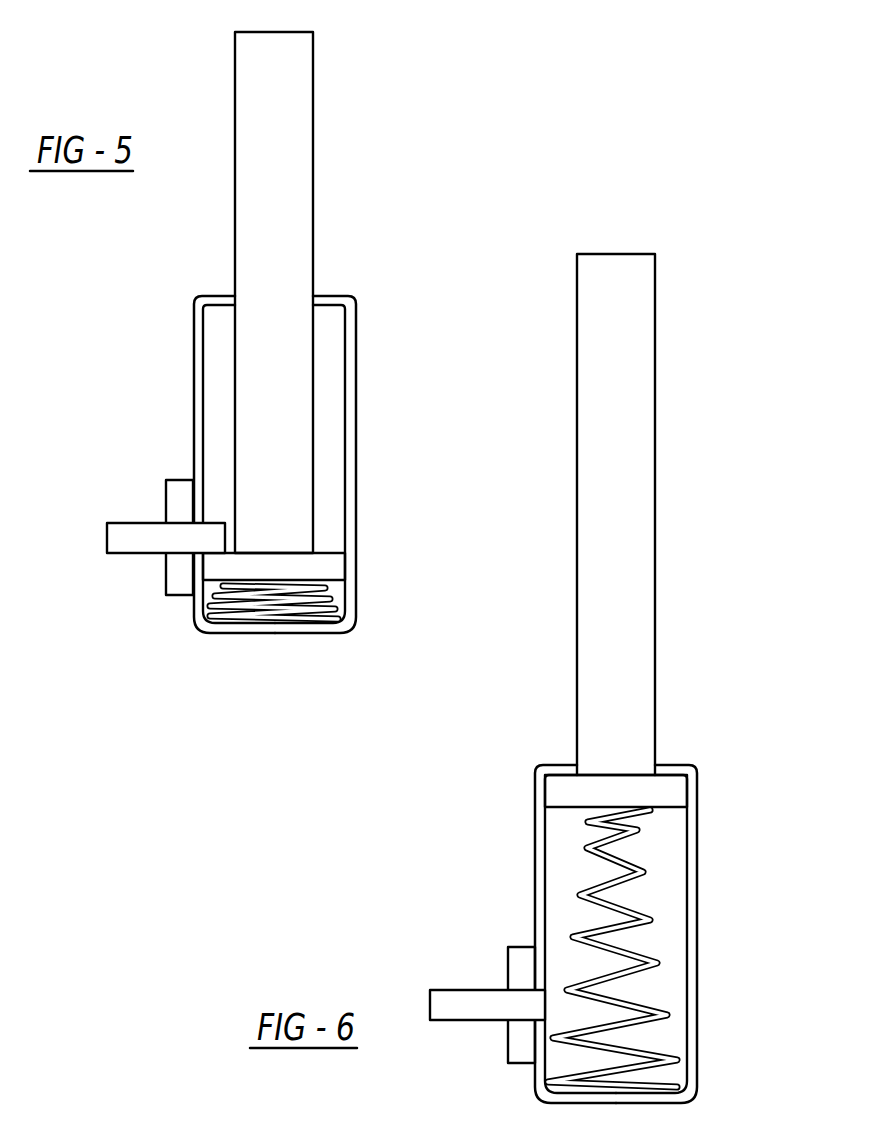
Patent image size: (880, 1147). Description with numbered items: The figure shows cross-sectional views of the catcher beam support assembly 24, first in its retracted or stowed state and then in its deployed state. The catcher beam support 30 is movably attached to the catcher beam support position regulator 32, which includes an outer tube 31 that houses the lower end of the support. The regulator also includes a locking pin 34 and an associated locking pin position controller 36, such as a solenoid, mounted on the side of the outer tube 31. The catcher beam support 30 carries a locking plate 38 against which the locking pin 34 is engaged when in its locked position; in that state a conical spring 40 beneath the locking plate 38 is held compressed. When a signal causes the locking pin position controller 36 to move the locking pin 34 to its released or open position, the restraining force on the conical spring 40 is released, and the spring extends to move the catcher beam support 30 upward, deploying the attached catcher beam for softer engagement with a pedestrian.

In FIG. 5, the catcher beam support assembly 24 is at (250, 232).
In FIG. 6, the catcher beam support assembly 24 is at (593, 605).
In FIG. 5, the catcher beam support 30 is at (291, 90).
In FIG. 6, the catcher beam support 30 is at (620, 482).
In FIG. 5, the outer tube 31 is at (195, 378).
In FIG. 6, the outer tube 31 is at (532, 848).
In FIG. 5, the catcher beam support position regulator 32 is at (357, 380).
In FIG. 6, the catcher beam support position regulator 32 is at (697, 876).
In FIG. 5, the locking pin 34 is at (130, 535).
In FIG. 6, the locking pin 34 is at (443, 998).
In FIG. 5, the locking pin position controller 36 is at (171, 581).
In FIG. 6, the locking pin position controller 36 is at (516, 1048).
In FIG. 5, the locking plate 38 is at (326, 565).
In FIG. 6, the locking plate 38 is at (668, 792).
In FIG. 5, the conical spring 40 is at (308, 617).
In FIG. 6, the conical spring 40 is at (630, 928).